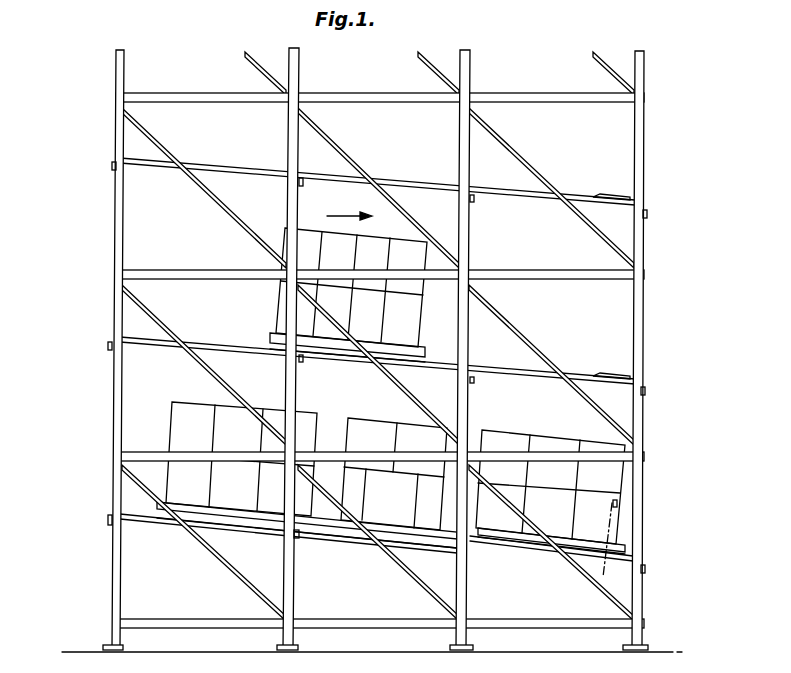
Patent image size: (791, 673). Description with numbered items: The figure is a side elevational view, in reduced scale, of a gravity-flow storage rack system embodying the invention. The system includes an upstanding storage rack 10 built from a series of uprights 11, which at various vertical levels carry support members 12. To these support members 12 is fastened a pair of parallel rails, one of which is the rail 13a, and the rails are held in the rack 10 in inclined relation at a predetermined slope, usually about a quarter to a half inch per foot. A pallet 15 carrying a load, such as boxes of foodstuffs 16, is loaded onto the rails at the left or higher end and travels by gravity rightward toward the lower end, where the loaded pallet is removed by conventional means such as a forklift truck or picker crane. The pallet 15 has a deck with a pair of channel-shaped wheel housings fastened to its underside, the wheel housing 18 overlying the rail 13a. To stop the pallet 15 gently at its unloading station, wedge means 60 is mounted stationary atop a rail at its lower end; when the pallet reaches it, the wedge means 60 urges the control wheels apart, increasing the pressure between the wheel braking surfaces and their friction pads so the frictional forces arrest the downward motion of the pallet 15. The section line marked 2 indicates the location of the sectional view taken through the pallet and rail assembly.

The storage rack 10 is at (653, 314).
The uprights 11 is at (115, 210).
The support members 12 is at (108, 346).
The rail 13a is at (168, 192).
The pallet 15 is at (342, 345).
The boxes of foodstuffs 16 is at (417, 282).
The wheel housing 18 is at (403, 357).
The wedge means 60 is at (609, 196).
The section line of Fig. 2 is at (622, 510).